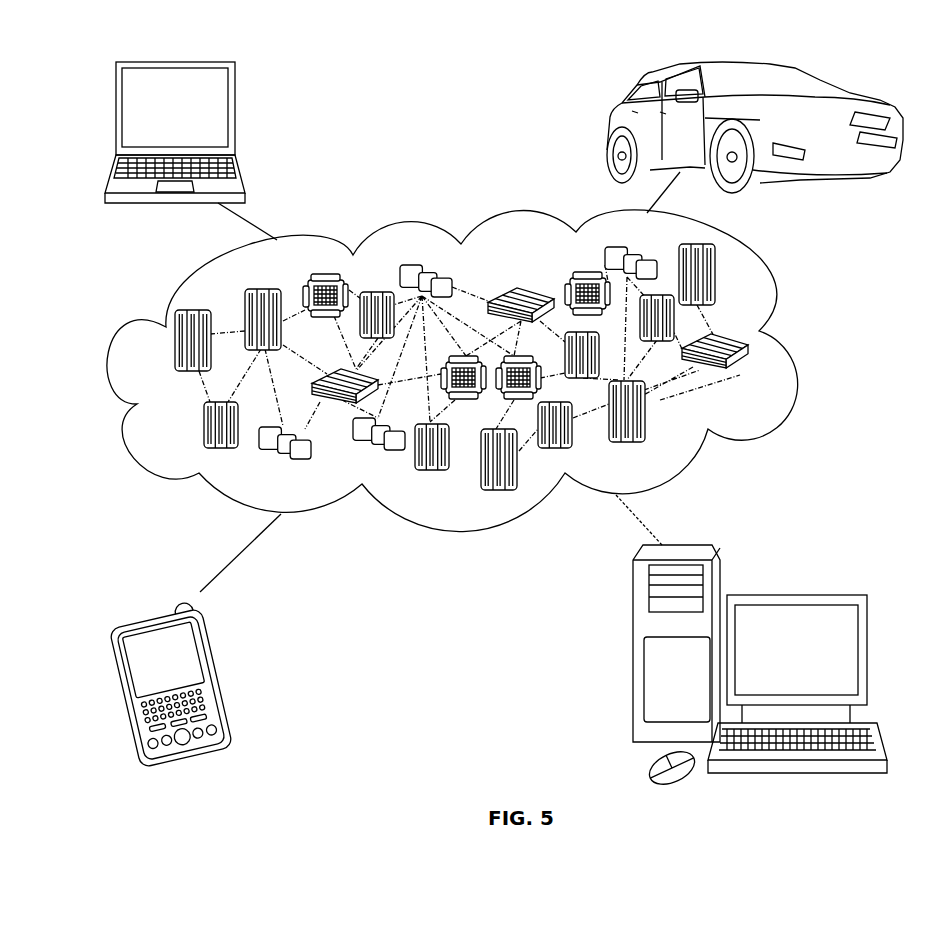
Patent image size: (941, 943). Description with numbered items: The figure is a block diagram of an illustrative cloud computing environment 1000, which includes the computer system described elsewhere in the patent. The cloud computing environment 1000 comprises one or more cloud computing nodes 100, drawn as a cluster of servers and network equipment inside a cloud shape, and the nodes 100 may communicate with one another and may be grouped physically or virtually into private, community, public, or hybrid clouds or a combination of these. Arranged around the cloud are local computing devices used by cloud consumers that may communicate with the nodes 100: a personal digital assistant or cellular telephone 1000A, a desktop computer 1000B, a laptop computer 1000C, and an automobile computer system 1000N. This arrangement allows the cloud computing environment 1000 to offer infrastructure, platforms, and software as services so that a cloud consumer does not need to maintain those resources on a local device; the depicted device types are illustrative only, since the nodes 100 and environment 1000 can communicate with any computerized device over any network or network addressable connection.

The cloud computing nodes 100 is at (752, 374).
The cloud computing environment 1000 is at (793, 345).
The personal digital assistant (PDA) or cellular telephone 1000A is at (227, 677).
The desktop computer 1000B is at (803, 580).
The laptop computer 1000C is at (237, 113).
The automobile computer system 1000N is at (605, 128).